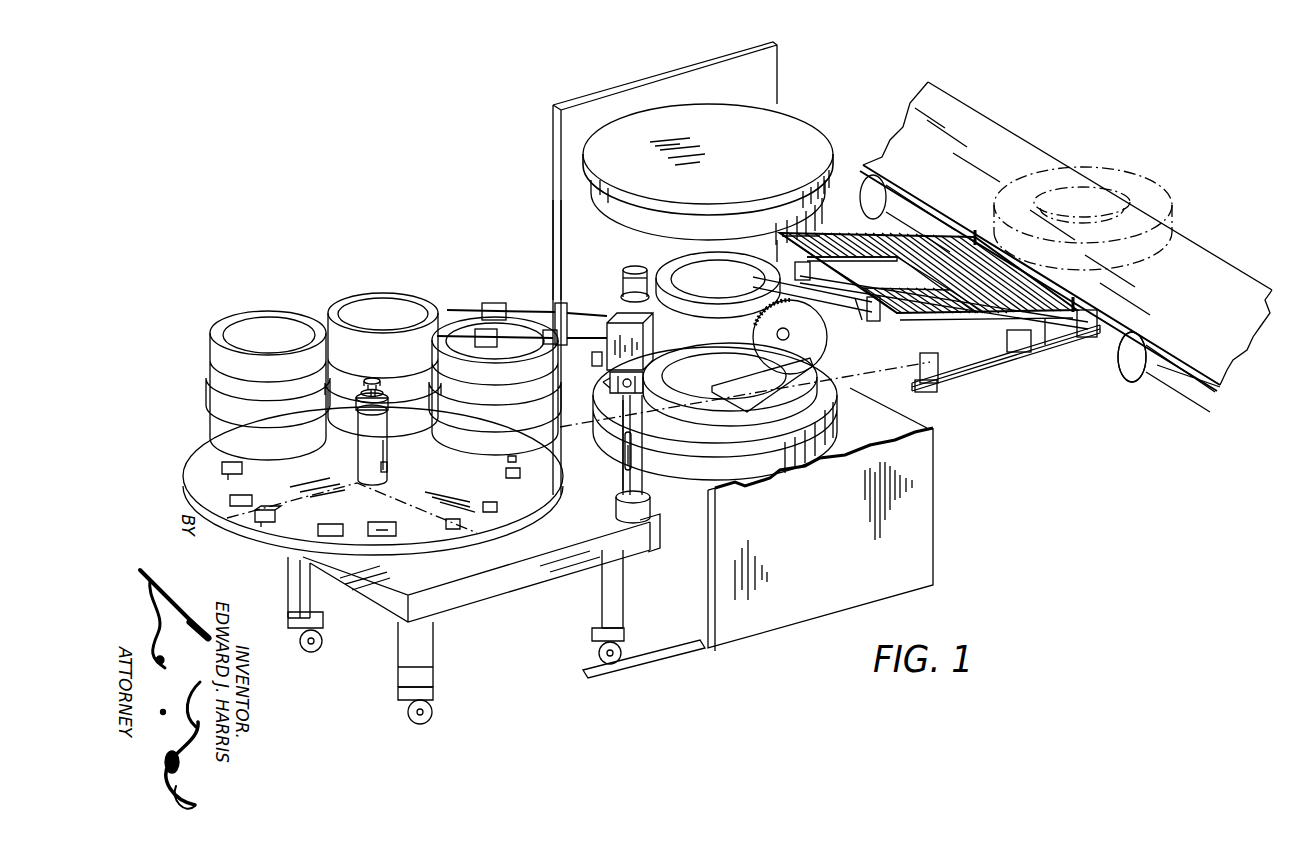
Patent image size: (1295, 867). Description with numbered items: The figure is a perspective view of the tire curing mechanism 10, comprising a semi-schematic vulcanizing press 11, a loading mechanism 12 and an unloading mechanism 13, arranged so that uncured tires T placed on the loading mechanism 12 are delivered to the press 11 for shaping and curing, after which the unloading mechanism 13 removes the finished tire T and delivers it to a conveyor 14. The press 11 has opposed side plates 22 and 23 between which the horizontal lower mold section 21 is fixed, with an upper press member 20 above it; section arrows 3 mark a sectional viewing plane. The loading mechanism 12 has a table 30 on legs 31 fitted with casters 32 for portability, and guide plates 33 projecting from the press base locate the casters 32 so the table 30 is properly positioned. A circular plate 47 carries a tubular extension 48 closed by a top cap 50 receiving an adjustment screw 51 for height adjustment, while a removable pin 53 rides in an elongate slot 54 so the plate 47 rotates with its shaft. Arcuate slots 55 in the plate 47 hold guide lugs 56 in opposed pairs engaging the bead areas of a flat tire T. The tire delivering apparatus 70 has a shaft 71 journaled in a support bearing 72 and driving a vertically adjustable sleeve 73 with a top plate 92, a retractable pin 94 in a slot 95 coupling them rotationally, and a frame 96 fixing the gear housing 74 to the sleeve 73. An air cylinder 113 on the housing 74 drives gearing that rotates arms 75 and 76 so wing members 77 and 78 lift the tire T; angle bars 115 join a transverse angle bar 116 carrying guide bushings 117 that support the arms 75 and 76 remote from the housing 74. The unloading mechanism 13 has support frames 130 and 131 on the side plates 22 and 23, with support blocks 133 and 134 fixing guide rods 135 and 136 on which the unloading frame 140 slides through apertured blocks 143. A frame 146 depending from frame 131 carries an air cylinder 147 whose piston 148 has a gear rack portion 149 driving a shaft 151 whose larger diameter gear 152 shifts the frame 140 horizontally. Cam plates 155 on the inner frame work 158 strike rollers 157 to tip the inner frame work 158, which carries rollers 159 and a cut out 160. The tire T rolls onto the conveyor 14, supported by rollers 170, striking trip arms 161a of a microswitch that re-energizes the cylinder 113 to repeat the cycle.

The tire curing mechanism 10 is at (1031, 552).
The vulcanizing press 11 is at (791, 66).
The loading mechanism 12 is at (170, 417).
The unloading mechanism 13 is at (989, 384).
The conveyor 14 is at (1196, 244).
The upper disc 20 is at (805, 125).
The lower mold section 21 is at (815, 470).
The side plate 22 is at (551, 120).
The side plate 23 is at (935, 476).
The table 30 is at (470, 604).
The leg 31 is at (287, 592).
The caster 32 is at (306, 652).
The guide plate 33 is at (660, 664).
The circular plate 47 is at (250, 542).
The tubular extension 48 is at (358, 470).
The top cap 50 is at (388, 410).
The adjustment screw 51 is at (375, 378).
The removable pin 53 is at (388, 455).
The elongate slot 54 is at (389, 470).
The arcuate slot 55 is at (326, 530).
The guide lug 56 is at (336, 528).
The tire delivering apparatus 70 is at (608, 512).
The shaft 71 is at (643, 488).
The support bearing 72 is at (652, 549).
The vertically adjustable sleeve 73 is at (621, 424).
The gear housing 74 is at (610, 300).
The arm 75 is at (540, 310).
The arm 76 is at (511, 346).
The wing member 77 is at (492, 302).
The wing member 78 is at (478, 348).
The top plate 92 is at (634, 427).
The retractable pin 94 is at (621, 450).
The slot 95 is at (636, 456).
The frame 96 is at (603, 383).
The air cylinder 113 is at (636, 266).
The angle bar 115 is at (596, 315).
The transverse angle bar 116 is at (560, 300).
The guide bushing 117 is at (553, 328).
The support frame 130 is at (1012, 366).
The support frame 131 is at (592, 359).
The support block 133 is at (934, 393).
The support block 134 is at (1100, 322).
The guide rod 135 is at (1005, 350).
The guide rod 136 is at (706, 300).
The unloading frame 140 is at (894, 234).
The apertured block 143 is at (794, 270).
The frame 146 is at (862, 325).
The air cylinder 147 is at (876, 322).
The piston 148 is at (845, 312).
The gear rack portion 149 is at (838, 295).
The shaft 151 is at (790, 337).
The larger diameter gear 152 is at (815, 364).
The cam plate 155 is at (996, 322).
The roller 157 is at (1047, 350).
The inner frame work 158 is at (900, 316).
The roller 159 is at (838, 233).
The cut out 160 is at (852, 256).
The trip arm 161a is at (976, 230).
The roller 170 is at (1148, 380).
The section line 3 is at (174, 496).
The tire T is at (1140, 172).